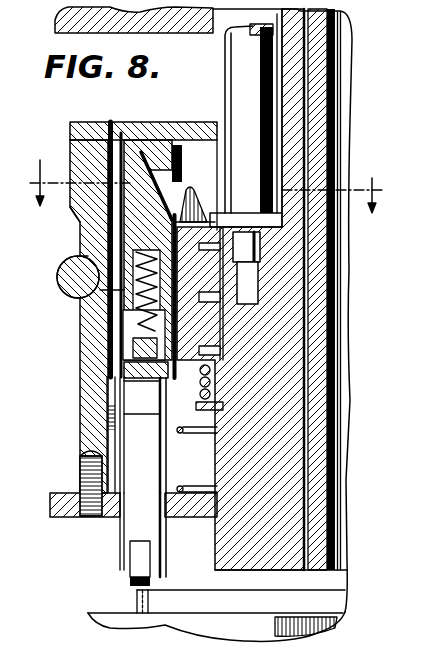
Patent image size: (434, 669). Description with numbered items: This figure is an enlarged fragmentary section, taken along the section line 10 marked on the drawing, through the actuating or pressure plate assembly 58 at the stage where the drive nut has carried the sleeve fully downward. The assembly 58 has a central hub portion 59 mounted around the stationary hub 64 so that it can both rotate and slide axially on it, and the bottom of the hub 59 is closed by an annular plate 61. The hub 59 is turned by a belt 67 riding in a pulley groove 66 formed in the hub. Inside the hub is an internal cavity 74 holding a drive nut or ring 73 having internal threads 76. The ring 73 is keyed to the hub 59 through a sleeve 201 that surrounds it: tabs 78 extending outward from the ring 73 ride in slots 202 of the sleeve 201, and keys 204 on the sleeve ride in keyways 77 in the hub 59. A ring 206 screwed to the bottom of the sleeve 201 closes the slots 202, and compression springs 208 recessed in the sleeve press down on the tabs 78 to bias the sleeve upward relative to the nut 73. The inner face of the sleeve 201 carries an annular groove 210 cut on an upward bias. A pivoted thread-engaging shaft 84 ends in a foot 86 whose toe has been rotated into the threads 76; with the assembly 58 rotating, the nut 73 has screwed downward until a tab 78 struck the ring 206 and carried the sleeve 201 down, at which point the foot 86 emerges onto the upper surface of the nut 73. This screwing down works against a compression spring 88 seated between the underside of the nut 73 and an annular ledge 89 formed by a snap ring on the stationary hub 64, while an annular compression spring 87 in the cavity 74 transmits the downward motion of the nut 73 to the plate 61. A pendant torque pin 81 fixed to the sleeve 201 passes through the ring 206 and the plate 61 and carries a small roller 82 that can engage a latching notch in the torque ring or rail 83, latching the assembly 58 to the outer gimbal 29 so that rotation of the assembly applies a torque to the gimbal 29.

The actuating or pressure plate assembly 58 is at (100, 108).
The pivoted thread-engaging member or shaft 84 is at (225, 107).
The foot 86 is at (215, 212).
The annular groove 210 is at (145, 158).
The section line 10 is at (202, 183).
The central hub portion 59 is at (80, 208).
The sleeve 201 is at (82, 228).
The pulley groove 66 is at (80, 262).
The belt 67 is at (65, 277).
The keys 204 is at (118, 290).
The compression springs 208 is at (110, 318).
The slots 202 is at (125, 338).
The tabs 78 is at (135, 355).
The ring 206 is at (125, 370).
The keyways 77 is at (108, 390).
The internal cavity 74 is at (183, 462).
The compression spring 88 is at (162, 387).
The annular ledge 89 is at (142, 405).
The annular compression spring 87 is at (180, 428).
The pendant torque pin 81 is at (128, 528).
The roller 82 is at (130, 575).
The torque ring or rail 83 is at (137, 598).
The outer gimbal 29 is at (122, 625).
The annular plate 61 is at (185, 518).
The internal threads 76 is at (258, 255).
The drive nut or ring 73 is at (266, 318).
The stationary hub 64 is at (275, 467).